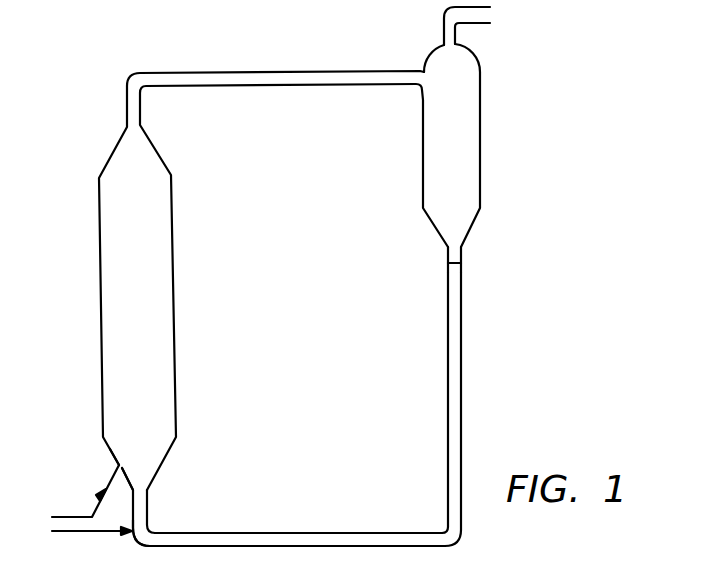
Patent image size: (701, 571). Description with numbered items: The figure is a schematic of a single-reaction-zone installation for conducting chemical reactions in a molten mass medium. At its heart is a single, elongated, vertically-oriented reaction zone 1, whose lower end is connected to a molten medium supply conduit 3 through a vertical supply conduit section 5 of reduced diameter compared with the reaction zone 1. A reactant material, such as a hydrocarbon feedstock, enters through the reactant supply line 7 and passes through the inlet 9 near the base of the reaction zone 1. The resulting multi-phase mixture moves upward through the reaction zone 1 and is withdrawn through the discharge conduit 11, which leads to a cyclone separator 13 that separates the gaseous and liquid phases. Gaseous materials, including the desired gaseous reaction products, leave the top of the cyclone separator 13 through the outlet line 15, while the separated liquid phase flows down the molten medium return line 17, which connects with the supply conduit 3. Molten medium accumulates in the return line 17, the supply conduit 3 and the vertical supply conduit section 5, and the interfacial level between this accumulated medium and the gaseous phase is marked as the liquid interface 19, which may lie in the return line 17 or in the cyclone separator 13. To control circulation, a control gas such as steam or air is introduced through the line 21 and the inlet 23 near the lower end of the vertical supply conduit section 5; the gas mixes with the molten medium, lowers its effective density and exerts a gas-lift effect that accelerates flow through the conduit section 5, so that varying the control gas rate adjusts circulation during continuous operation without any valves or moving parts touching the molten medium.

The reaction zone 1 is at (133, 337).
The molten medium supply conduit 3 is at (285, 541).
The vertical supply conduit section 5 is at (145, 512).
The reactant supply line 7 is at (96, 500).
The inlet 9 is at (116, 462).
The discharge conduit 11 is at (128, 97).
The cyclone separator 13 is at (465, 143).
The outlet line 15 is at (445, 16).
The molten medium return line 17 is at (464, 400).
The liquid interface 19 is at (455, 254).
The control gas line 21 is at (80, 533).
The control gas inlet 23 is at (130, 537).